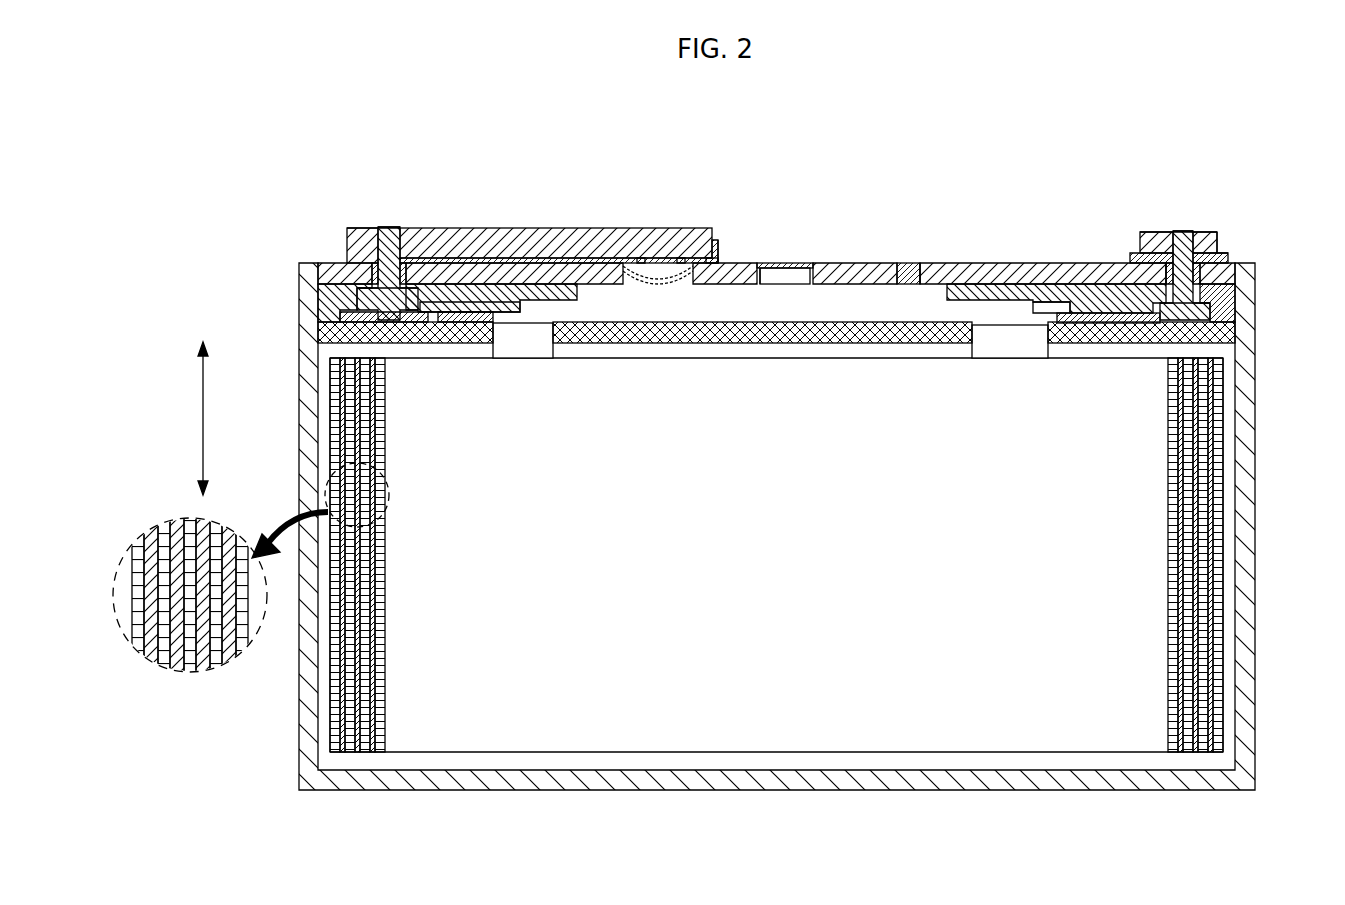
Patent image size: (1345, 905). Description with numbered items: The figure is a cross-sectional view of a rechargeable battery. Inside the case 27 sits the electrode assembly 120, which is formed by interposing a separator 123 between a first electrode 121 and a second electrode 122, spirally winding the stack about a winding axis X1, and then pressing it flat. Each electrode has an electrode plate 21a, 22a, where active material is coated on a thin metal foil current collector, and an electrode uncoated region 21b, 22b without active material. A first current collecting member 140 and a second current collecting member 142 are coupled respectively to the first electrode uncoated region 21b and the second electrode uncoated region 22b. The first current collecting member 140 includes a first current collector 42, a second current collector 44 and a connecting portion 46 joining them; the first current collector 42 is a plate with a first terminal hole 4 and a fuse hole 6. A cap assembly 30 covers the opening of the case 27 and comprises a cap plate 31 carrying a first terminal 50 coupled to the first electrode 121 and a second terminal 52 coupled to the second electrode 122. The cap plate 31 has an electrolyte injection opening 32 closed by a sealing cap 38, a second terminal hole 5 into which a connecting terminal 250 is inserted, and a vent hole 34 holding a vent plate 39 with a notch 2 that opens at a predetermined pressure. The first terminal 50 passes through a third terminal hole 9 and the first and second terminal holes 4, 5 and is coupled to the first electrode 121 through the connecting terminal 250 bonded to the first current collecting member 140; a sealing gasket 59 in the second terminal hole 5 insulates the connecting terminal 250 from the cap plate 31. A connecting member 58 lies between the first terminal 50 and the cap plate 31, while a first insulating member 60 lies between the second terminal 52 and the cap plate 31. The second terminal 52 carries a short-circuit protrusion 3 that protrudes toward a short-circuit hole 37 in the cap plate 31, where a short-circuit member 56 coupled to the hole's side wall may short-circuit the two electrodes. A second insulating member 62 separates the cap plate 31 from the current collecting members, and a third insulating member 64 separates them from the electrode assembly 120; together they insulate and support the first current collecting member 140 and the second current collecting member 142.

The notch 2 is at (778, 264).
The short-circuit protrusion 3 is at (650, 272).
The first terminal hole 4 is at (395, 320).
The second terminal hole 5 is at (394, 232).
The fuse hole 6 is at (408, 333).
The third terminal hole 9 is at (388, 250).
The case 27 is at (1245, 500).
The cap assembly 30 is at (856, 262).
The cap plate 31 is at (1100, 268).
The electrolyte injection opening 32 is at (918, 264).
The vent hole 34 is at (780, 268).
The short-circuit hole 37 is at (640, 258).
The sealing cap 38 is at (905, 265).
The vent plate 39 is at (806, 265).
The first current collector 42 is at (425, 300).
The second current collector 44 is at (515, 312).
The connecting portion 46 is at (470, 300).
The first terminal 50 is at (1152, 258).
The second terminal 52 is at (590, 245).
The short-circuit member 56 is at (688, 250).
The connecting member 58 is at (1230, 262).
The sealing gasket 59 is at (372, 280).
The first insulating member 60 is at (720, 255).
The second insulating member 62 is at (330, 297).
The third insulating member 64 is at (325, 330).
The electrode assembly 120 is at (668, 584).
The first electrode 121 is at (1058, 490).
The second electrode 122 is at (556, 410).
The separator 123 is at (165, 552).
The first current collecting member 140 is at (1062, 183).
The second current collecting member 142 is at (552, 153).
The electrode plate 21a is at (1190, 445).
The first electrode uncoated region 21b is at (1012, 358).
The electrode plate 22a is at (385, 445).
The second electrode uncoated region 22b is at (518, 350).
The connecting terminal 250 is at (372, 255).
The winding axis X1 is at (184, 418).